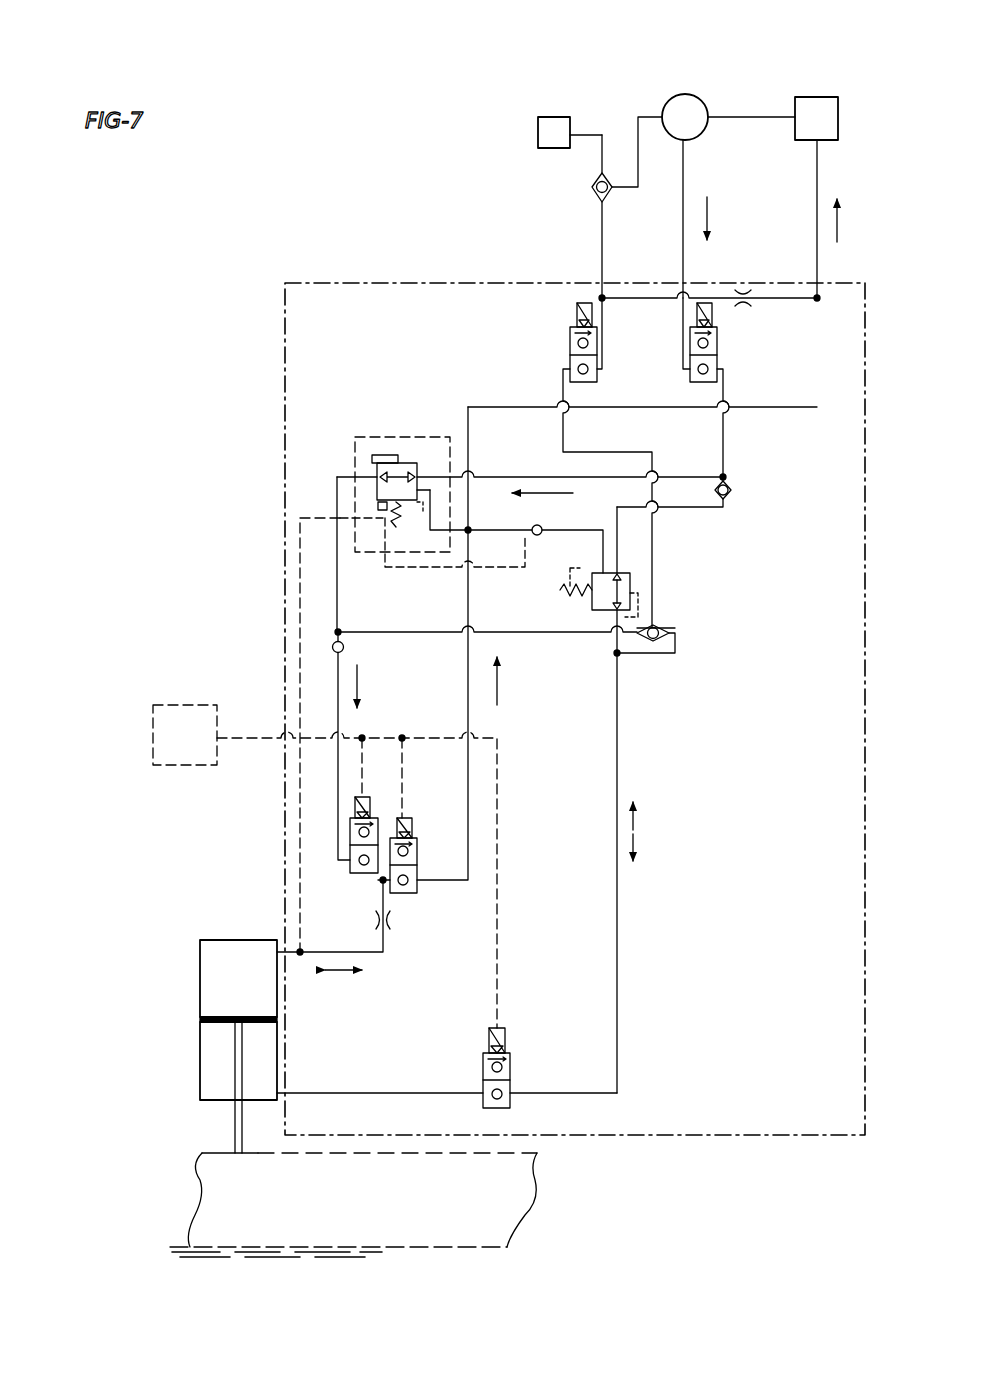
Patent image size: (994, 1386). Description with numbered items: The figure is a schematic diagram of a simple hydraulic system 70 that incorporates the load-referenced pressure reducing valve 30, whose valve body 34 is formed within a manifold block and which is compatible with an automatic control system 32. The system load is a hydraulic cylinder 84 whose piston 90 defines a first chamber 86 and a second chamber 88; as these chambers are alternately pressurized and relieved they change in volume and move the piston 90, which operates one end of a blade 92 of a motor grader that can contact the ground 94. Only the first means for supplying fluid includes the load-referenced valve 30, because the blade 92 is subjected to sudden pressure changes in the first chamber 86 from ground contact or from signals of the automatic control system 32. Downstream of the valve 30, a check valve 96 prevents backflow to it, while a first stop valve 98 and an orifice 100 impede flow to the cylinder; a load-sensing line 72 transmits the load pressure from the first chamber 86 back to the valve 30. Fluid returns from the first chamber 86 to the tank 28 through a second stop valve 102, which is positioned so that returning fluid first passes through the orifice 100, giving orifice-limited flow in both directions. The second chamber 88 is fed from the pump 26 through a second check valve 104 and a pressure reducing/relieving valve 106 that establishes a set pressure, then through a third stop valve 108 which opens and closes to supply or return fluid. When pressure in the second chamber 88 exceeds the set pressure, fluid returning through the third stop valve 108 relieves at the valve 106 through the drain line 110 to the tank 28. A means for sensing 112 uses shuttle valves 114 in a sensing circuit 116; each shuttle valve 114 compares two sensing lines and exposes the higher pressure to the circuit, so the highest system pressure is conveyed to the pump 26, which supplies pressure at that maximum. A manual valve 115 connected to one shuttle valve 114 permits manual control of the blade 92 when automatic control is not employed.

The pump 26 is at (684, 93).
The tank 28 is at (809, 97).
The load-referenced pressure reducing valve 30 is at (401, 462).
The automatic control system 32 is at (203, 752).
The valve body 34 is at (357, 437).
The hydraulic system 70 is at (215, 285).
The load-sensing line 72 is at (298, 560).
The hydraulic cylinder 84 is at (176, 1024).
The first chamber 86 is at (200, 966).
The second chamber 88 is at (205, 1073).
The piston 90 is at (235, 1020).
The blade 92 is at (237, 1181).
The ground 94 is at (287, 1261).
The check valve 96 is at (332, 647).
The first stop valve 98 is at (357, 874).
The orifice 100 is at (388, 932).
The second stop valve 102 is at (412, 897).
The second check valve 104 is at (730, 490).
The pressure reducing/relieving valve 106 is at (633, 577).
The third stop valve 108 is at (512, 1063).
The drain line 110 is at (590, 568).
The means for sensing 112 is at (608, 176).
The shuttle valve 114 is at (596, 190).
The manual valve 115 is at (538, 128).
The sensing circuit 116 is at (625, 297).